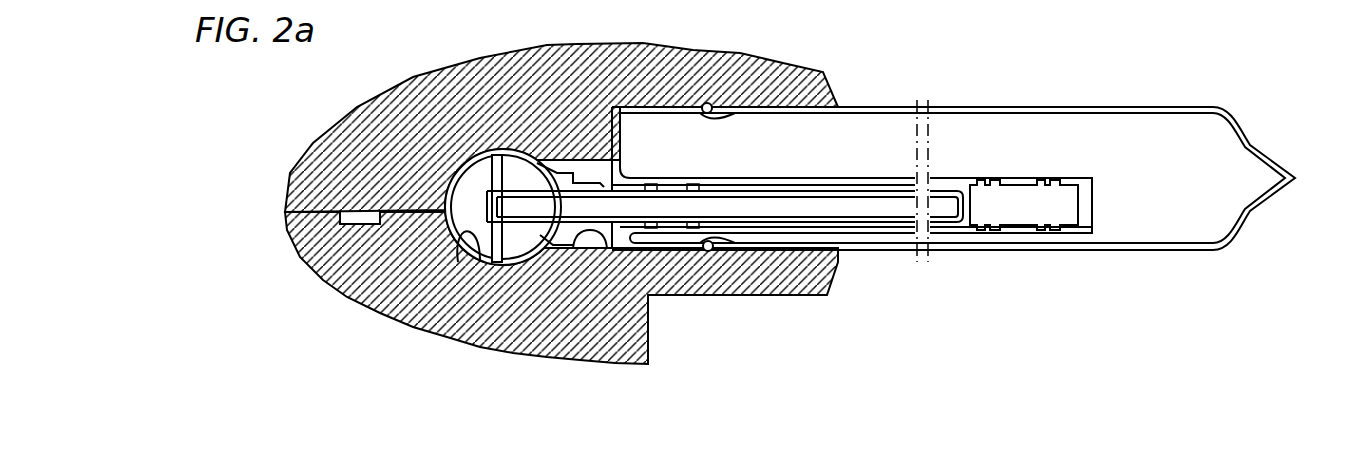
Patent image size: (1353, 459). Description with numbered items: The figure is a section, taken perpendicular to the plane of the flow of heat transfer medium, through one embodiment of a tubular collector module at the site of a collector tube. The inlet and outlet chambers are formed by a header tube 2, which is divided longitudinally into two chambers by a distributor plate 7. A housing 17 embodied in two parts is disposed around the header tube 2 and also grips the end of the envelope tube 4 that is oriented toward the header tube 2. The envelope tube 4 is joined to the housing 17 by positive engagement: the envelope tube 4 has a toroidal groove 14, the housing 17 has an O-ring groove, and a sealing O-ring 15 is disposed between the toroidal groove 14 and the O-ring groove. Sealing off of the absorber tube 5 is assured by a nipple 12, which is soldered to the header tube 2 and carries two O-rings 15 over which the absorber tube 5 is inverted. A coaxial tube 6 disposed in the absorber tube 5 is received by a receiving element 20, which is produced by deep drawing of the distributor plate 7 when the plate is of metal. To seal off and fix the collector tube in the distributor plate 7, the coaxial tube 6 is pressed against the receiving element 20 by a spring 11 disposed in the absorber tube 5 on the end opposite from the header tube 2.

The header tube 2 is at (492, 232).
The envelope tube 4 is at (1240, 132).
The absorber tube 5 is at (953, 178).
The coaxial tube 6 is at (845, 191).
The distributor plate 7 is at (495, 163).
The spring 11 is at (1077, 210).
The nipple 12 is at (613, 253).
The toroidal groove 14 is at (733, 115).
The O-ring 15 is at (693, 235).
The housing 17 is at (315, 150).
The receiving element 20 is at (483, 252).